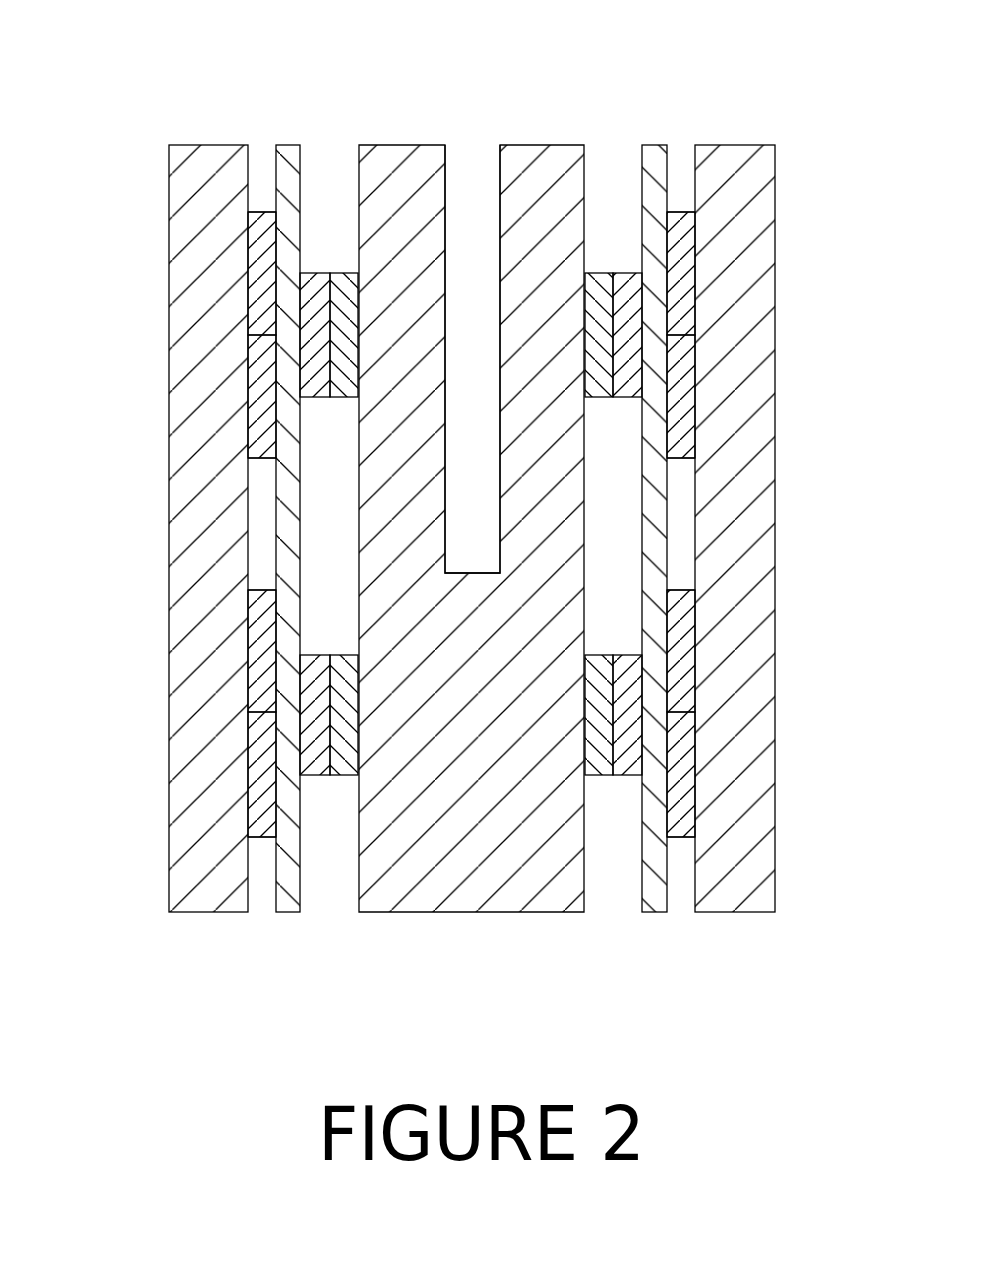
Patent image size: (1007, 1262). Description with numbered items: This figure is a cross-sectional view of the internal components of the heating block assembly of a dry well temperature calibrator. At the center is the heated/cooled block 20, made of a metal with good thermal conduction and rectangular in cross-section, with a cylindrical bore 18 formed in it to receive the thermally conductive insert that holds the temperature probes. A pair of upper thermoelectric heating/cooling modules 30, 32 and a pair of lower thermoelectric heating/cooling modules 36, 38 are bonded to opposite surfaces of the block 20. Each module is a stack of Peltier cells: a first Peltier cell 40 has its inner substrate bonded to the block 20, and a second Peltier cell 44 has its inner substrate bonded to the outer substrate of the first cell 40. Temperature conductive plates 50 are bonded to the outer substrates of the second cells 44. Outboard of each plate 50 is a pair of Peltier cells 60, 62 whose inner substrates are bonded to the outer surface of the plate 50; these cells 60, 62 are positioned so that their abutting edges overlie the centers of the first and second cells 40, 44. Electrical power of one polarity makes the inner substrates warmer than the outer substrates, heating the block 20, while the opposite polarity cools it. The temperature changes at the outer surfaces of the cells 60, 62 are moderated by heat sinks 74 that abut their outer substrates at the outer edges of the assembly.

The cylindrical bore 18 is at (478, 140).
The heated/cooled block 20 is at (492, 787).
The upper thermoelectric heating/cooling module 30 is at (330, 224).
The upper thermoelectric heating/cooling module 32 is at (610, 224).
The lower thermoelectric heating/cooling module 36 is at (330, 806).
The lower thermoelectric heating/cooling module 38 is at (612, 806).
The first Peltier cell 40 is at (340, 400).
The second Peltier cell 44 is at (325, 400).
The temperature conductive plate 50 is at (292, 145).
The Peltier cell 60 is at (259, 210).
The Peltier cell 62 is at (272, 457).
The heat sink 74 is at (178, 716).